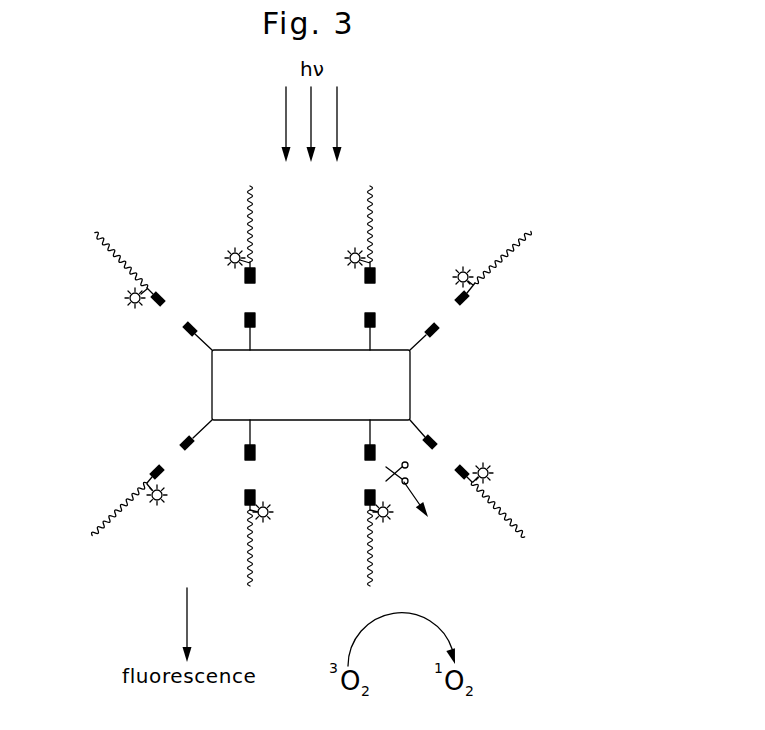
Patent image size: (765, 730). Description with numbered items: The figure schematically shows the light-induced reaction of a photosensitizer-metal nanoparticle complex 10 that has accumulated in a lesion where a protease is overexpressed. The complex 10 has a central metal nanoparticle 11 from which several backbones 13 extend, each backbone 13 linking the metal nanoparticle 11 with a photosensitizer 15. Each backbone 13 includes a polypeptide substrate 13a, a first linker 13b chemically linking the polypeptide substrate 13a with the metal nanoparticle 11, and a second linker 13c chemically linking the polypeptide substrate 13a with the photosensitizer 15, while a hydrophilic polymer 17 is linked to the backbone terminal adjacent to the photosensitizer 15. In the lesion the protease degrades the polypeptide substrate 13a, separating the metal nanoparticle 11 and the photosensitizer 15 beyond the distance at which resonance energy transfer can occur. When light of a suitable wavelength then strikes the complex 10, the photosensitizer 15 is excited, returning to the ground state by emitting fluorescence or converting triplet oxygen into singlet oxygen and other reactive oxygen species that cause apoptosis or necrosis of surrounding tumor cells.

The photosensitizer-metal nanoparticle complex 10 is at (451, 187).
The metal nanoparticle 11 is at (323, 398).
The backbone 13 is at (301, 505).
The polypeptide substrate 13a is at (255, 498).
The first linker 13b is at (253, 433).
The second linker 13c is at (255, 501).
The photosensitizer 15 is at (268, 520).
The hydrophilic polymer 17 is at (252, 572).